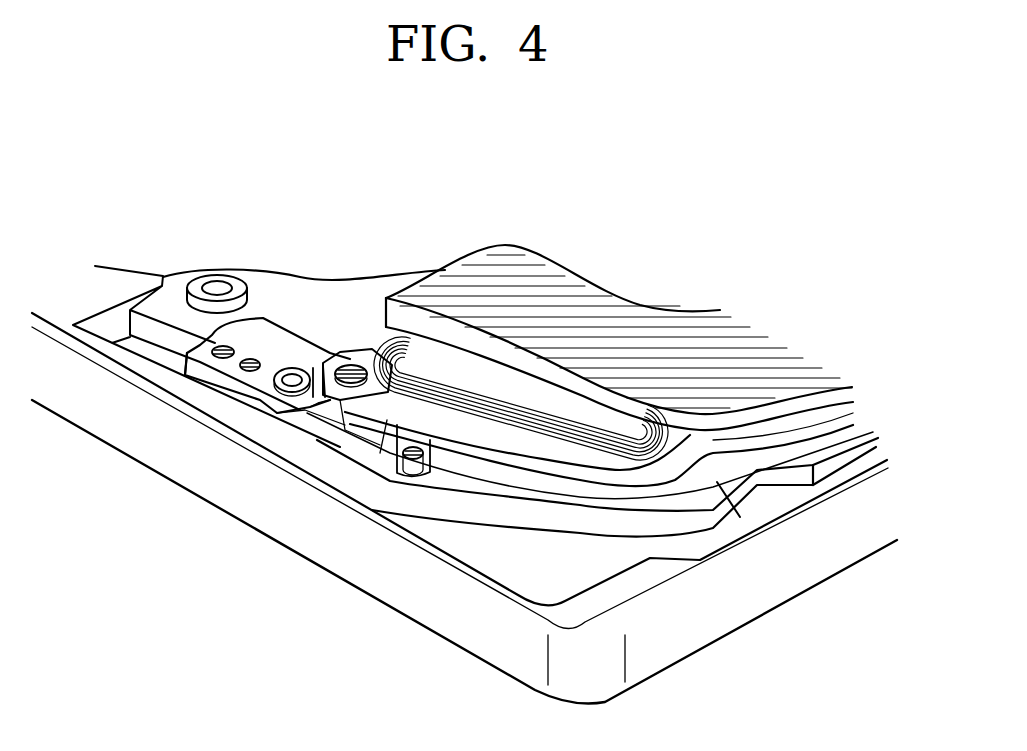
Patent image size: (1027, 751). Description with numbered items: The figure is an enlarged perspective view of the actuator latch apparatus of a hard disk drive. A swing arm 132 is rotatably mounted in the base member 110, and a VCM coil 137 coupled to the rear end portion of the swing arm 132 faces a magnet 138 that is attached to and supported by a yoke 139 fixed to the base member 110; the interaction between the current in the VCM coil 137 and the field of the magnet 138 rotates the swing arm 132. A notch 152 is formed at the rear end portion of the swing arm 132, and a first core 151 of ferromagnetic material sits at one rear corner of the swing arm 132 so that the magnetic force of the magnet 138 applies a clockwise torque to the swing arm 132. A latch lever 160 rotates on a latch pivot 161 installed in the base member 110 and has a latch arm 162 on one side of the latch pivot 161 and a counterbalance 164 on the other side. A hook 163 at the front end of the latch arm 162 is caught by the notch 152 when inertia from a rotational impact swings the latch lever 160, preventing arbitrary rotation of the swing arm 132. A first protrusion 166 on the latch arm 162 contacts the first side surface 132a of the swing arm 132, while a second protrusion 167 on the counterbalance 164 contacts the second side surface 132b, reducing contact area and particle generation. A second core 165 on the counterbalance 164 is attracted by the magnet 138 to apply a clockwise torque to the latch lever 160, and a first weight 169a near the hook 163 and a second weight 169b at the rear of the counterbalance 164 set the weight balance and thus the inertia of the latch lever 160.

The base member 110 is at (653, 660).
The swing arm 132 is at (612, 466).
The first side surface 132a is at (305, 408).
The second side surface 132b is at (323, 362).
The VCM coil 137 is at (634, 442).
The magnet 138 is at (743, 357).
The yoke 139 is at (740, 517).
The first core 151 is at (354, 358).
The notch 152 is at (387, 420).
The latch lever 160 is at (255, 380).
The latch pivot 161 is at (292, 396).
The latch arm 162 is at (356, 405).
The hook 163 is at (430, 435).
The counterbalance 164 is at (249, 373).
The second core 165 is at (222, 360).
The first protrusion 166 is at (318, 403).
The second protrusion 167 is at (252, 285).
The first weight 169a is at (390, 425).
The second weight 169b is at (186, 370).